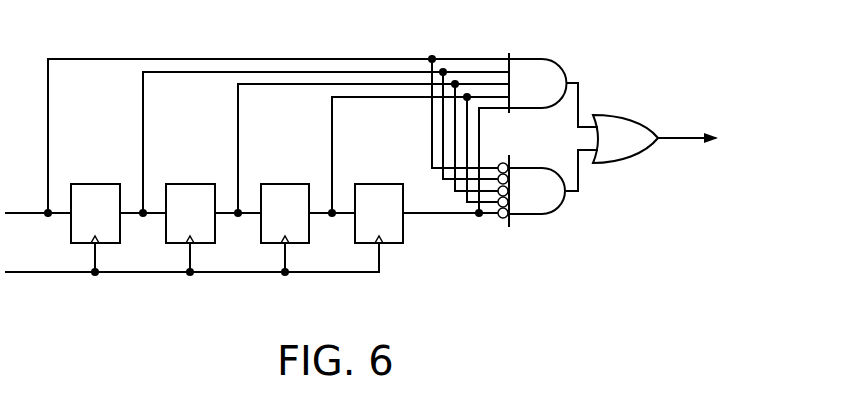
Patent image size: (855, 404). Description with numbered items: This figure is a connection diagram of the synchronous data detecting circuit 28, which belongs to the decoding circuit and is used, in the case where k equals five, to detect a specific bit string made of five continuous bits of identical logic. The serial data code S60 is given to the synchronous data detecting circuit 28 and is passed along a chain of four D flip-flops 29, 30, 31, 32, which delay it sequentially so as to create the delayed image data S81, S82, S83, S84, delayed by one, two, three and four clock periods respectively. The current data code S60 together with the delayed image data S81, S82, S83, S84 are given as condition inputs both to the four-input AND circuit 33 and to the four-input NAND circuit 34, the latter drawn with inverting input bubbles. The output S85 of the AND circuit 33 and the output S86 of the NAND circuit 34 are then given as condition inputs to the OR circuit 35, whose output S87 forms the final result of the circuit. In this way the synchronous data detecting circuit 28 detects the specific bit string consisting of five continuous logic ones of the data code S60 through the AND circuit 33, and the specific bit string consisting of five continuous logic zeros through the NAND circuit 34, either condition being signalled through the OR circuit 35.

The synchronous data detecting circuit 28 is at (657, 290).
The D flip-flop 29 is at (93, 184).
The D flip-flop 30 is at (188, 184).
The D flip-flop 31 is at (283, 184).
The D flip-flop 32 is at (377, 184).
The AND circuit 33 is at (545, 55).
The NAND circuit 34 is at (543, 216).
The OR circuit 35 is at (642, 116).
The serial data code S60 is at (49, 72).
The delayed image data S81 is at (144, 85).
The delayed image data S82 is at (239, 96).
The delayed image data S83 is at (333, 110).
The delayed image data S84 is at (445, 216).
The output of the AND circuit S85 is at (578, 83).
The output of the NAND circuit S86 is at (580, 193).
The OR gate 35 output signal S87 is at (689, 136).